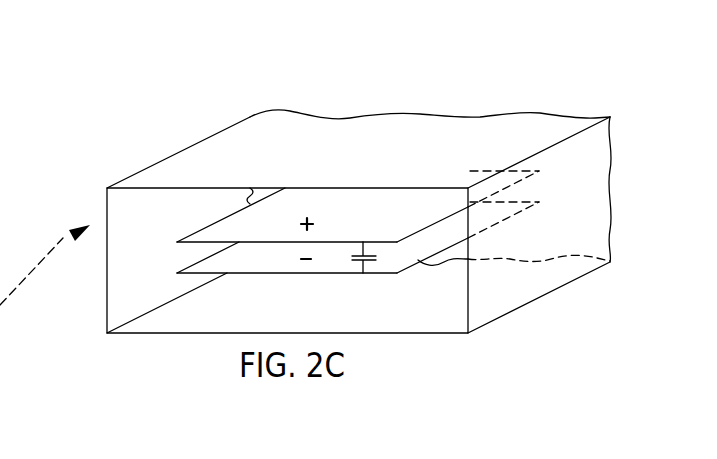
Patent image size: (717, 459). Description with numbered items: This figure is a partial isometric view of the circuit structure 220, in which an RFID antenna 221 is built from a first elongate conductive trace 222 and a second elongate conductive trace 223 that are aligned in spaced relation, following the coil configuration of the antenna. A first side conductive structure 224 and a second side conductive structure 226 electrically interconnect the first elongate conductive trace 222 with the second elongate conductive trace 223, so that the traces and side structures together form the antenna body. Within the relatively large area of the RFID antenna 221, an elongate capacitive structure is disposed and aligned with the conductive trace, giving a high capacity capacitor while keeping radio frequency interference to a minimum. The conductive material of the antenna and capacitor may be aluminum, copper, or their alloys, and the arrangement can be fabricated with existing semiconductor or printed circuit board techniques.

The circuit structure 220 is at (211, 124).
The RFID antenna 221 is at (433, 115).
The first elongate conductive trace 222 is at (182, 158).
The second elongate conductive trace 223 is at (423, 318).
The first side conductive structure 224 is at (560, 243).
The second side conductive structure 226 is at (133, 287).